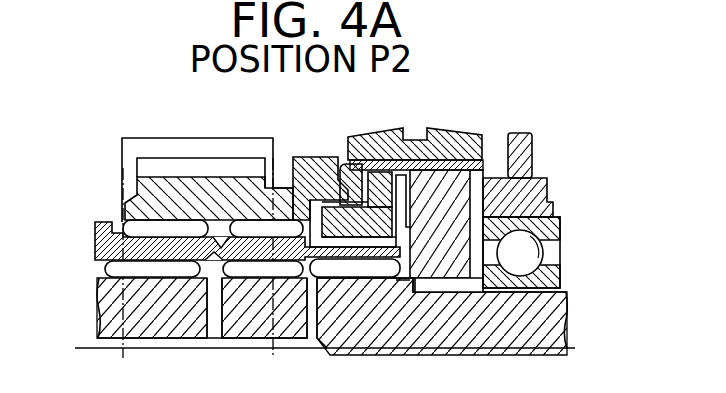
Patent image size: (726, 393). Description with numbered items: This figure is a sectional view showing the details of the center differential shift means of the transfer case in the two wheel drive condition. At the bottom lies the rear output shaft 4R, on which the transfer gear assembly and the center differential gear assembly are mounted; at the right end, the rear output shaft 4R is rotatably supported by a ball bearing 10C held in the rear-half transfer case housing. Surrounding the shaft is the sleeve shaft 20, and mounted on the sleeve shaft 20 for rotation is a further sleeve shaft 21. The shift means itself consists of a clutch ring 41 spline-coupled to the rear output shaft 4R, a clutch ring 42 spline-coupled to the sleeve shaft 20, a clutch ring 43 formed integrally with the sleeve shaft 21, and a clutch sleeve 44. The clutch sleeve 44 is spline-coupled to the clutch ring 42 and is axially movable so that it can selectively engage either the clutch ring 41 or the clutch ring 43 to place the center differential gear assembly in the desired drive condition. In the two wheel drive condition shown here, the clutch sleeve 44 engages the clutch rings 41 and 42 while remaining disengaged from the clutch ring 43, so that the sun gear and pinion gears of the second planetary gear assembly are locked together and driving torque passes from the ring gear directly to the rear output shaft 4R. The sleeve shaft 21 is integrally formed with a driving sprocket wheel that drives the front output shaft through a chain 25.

The rear output shaft 4R is at (553, 315).
The sleeve shaft 20 is at (95, 246).
The sleeve shaft 21 is at (127, 202).
The chain 25 is at (160, 138).
The clutch ring 43 is at (300, 157).
The clutch ring 42 is at (352, 162).
The clutch sleeve 44 is at (440, 128).
The clutch ring 41 is at (482, 172).
The ball bearing 10C is at (560, 255).